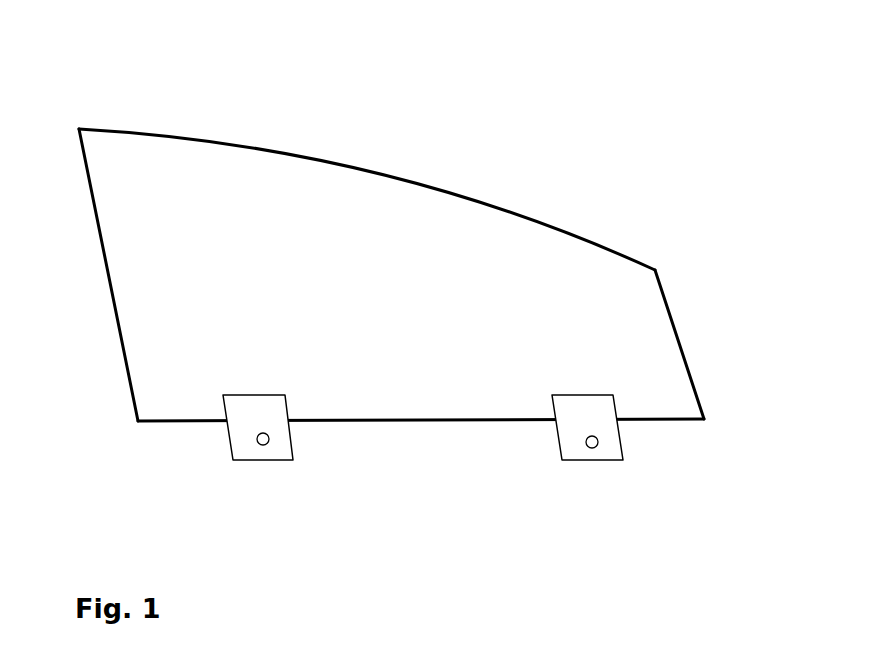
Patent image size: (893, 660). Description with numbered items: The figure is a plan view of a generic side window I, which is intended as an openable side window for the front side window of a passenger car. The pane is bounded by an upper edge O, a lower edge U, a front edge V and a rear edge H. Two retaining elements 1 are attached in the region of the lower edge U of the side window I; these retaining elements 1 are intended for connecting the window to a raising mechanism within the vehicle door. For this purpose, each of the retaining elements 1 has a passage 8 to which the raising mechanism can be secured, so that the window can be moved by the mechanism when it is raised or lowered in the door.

The retaining element 1 is at (245, 428).
The passage 8 is at (268, 444).
The upper edge of the side window O is at (367, 133).
The lower edge of the side window U is at (433, 445).
The rear edge of the side window H is at (85, 272).
The front edge of the side window V is at (704, 323).
The side window I is at (633, 282).